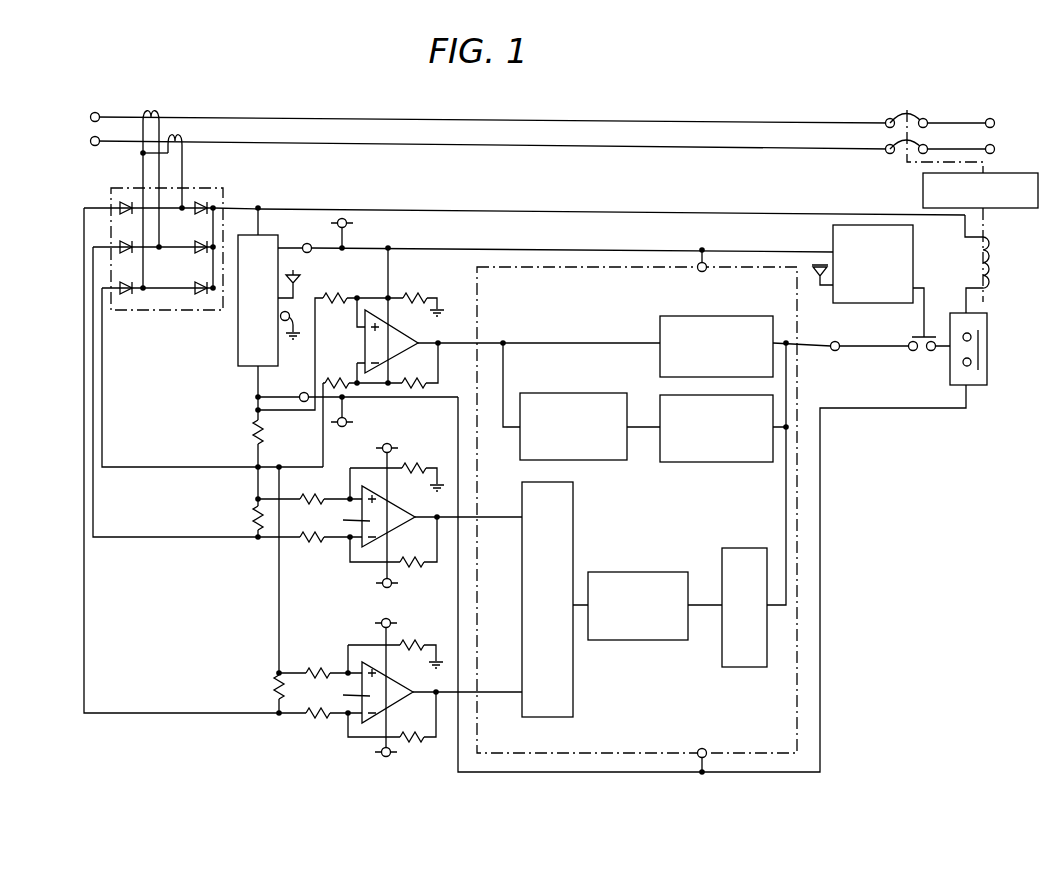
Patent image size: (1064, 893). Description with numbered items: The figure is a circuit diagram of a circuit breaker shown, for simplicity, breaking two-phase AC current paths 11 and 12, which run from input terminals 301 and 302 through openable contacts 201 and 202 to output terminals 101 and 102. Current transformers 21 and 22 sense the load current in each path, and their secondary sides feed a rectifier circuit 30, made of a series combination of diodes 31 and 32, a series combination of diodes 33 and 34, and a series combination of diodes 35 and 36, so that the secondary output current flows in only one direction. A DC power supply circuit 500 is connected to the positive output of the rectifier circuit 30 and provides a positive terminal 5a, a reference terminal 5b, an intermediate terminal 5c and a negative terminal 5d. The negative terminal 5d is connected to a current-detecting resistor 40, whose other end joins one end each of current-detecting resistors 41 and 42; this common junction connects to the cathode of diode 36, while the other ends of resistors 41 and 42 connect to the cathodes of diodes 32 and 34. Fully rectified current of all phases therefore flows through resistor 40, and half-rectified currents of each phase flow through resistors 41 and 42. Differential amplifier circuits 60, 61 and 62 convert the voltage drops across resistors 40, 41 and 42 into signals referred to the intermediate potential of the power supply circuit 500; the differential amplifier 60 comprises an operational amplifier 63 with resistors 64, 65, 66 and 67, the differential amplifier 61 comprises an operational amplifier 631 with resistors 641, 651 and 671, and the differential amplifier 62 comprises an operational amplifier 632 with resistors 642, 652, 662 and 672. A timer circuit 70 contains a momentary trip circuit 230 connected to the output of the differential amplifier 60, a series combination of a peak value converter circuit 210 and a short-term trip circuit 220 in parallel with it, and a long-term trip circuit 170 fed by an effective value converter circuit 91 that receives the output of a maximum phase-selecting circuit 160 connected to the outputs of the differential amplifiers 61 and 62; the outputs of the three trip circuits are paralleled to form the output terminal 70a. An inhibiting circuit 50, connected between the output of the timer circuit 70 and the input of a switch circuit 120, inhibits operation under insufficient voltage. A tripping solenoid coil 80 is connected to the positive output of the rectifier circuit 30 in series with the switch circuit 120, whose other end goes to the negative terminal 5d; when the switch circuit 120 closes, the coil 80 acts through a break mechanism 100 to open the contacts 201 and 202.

The AC current path 11 is at (598, 118).
The AC current path 12 is at (621, 145).
The input terminal 301 is at (95, 112).
The input terminal 302 is at (90, 141).
The contact 201 is at (886, 119).
The contact 202 is at (886, 146).
The output terminal 101 is at (990, 119).
The output terminal 102 is at (995, 150).
The break mechanism 100 is at (923, 192).
The current transformer 21 is at (156, 113).
The current transformer 22 is at (185, 137).
The rectifier circuit 30 is at (214, 194).
The diode 31 is at (195, 220).
The diode 32 is at (126, 200).
The diode 33 is at (195, 258).
The diode 34 is at (120, 240).
The diode 35 is at (201, 297).
The diode 36 is at (126, 297).
The DC power supply circuit 500 is at (238, 358).
The current-detecting resistor 40 is at (252, 432).
The current-detecting resistor 41 is at (272, 692).
The current-detecting resistor 42 is at (252, 517).
The positive terminal 5a is at (307, 244).
The reference terminal 5b is at (300, 273).
The intermediate terminal 5c is at (290, 315).
The negative terminal 5d is at (304, 392).
The differential amplifier circuit 60 is at (379, 312).
The differential amplifier circuit 61 is at (376, 738).
The differential amplifier circuit 62 is at (378, 558).
The operational amplifier 63 is at (396, 336).
The resistor 64 is at (339, 296).
The resistor 65 is at (337, 382).
The resistor 66 is at (413, 296).
The resistor 67 is at (414, 382).
The operational amplifier 631 is at (338, 693).
The operational amplifier 632 is at (338, 519).
The resistor 641 is at (314, 670).
The resistor 642 is at (312, 494).
The resistor 651 is at (314, 718).
The resistor 652 is at (314, 541).
The resistor 662 is at (404, 464).
The resistor 671 is at (412, 644).
The resistor 672 is at (412, 567).
The timer circuit 70 is at (583, 265).
The output terminal 70a is at (835, 342).
The maximum phase-selecting circuit 160 is at (573, 500).
The effective value converter circuit 91 is at (633, 572).
The long-term trip circuit 170 is at (743, 548).
The peak value converter circuit 210 is at (586, 393).
The short-term trip circuit 220 is at (716, 462).
The momentary trip circuit 230 is at (735, 316).
The inhibiting circuit 50 is at (913, 243).
The tripping solenoid coil 80 is at (994, 262).
The switch circuit 120 is at (987, 338).